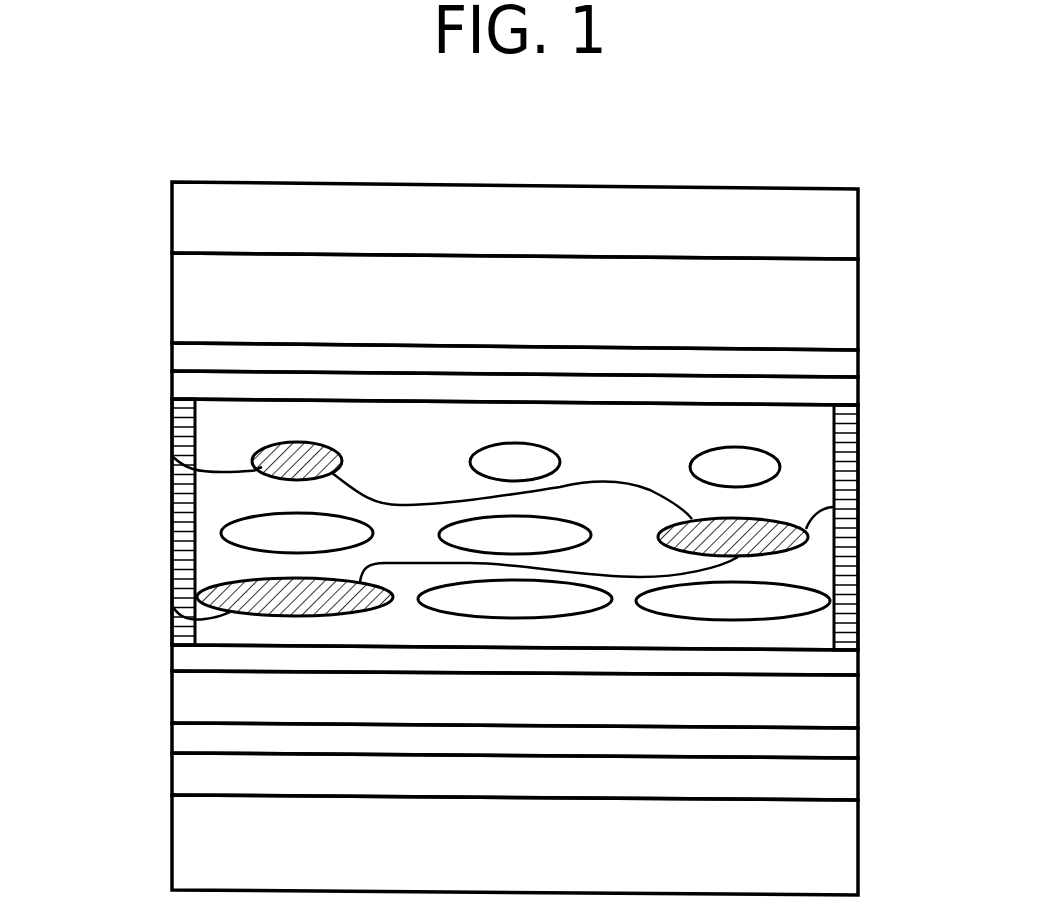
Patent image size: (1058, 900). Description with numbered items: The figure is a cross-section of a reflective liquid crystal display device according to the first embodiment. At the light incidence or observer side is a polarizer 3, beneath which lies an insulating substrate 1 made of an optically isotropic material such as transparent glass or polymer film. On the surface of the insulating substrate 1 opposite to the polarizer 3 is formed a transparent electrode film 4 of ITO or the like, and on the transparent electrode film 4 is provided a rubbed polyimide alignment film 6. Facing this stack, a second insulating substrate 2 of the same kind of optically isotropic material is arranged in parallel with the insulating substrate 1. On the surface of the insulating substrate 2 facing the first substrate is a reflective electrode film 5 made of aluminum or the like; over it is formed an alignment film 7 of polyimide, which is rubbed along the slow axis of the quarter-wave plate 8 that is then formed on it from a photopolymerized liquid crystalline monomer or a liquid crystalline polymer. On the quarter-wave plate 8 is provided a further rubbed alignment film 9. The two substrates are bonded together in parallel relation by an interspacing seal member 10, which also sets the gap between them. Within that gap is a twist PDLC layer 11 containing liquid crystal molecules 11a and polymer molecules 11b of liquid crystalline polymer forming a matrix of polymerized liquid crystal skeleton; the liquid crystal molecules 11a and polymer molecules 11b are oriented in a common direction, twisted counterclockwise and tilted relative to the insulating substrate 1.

The insulating substrate 1 is at (849, 300).
The insulating substrate 2 is at (847, 838).
The polarizer 3 is at (849, 224).
The transparent electrode film 4 is at (848, 362).
The reflective electrode film 5 is at (847, 785).
The alignment film 6 is at (848, 393).
The alignment film 7 is at (847, 748).
The quarter-wave plate 8 is at (847, 703).
The alignment film 9 is at (847, 663).
The seal member 10 is at (848, 557).
The twist PDLC layer 11 is at (227, 492).
The liquid crystal molecules 11a is at (258, 452).
The polymer molecules 11b is at (243, 537).